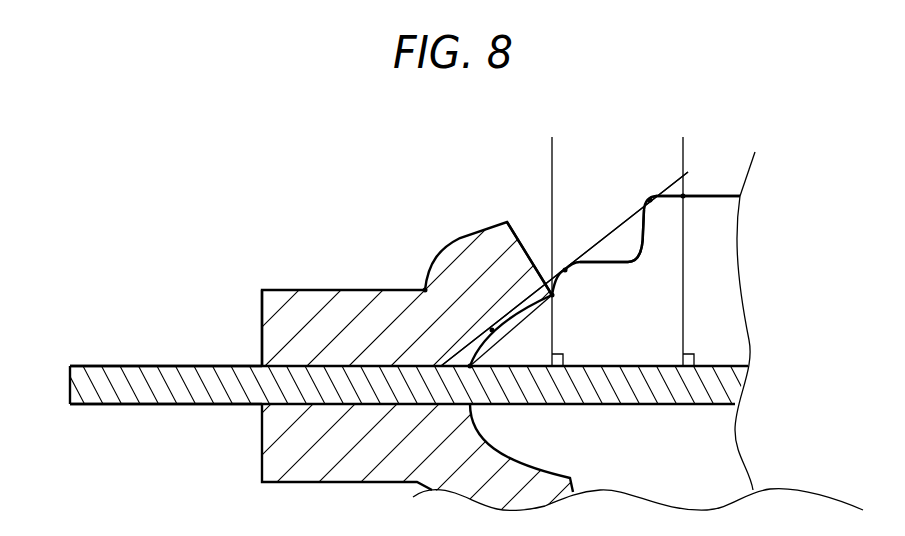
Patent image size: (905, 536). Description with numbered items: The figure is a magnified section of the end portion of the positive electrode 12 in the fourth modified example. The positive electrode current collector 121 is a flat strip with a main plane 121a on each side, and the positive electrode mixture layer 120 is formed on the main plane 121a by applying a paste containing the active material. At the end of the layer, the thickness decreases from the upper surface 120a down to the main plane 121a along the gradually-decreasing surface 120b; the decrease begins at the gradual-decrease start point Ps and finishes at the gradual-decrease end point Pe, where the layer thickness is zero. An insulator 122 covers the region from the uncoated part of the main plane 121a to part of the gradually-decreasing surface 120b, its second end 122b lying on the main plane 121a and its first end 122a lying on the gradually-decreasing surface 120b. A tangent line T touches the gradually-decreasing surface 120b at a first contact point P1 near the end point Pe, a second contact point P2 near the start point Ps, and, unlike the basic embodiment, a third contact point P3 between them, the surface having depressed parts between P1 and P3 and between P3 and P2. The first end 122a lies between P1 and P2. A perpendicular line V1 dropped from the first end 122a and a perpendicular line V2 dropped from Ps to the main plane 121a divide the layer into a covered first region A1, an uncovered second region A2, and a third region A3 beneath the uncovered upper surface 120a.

The positive electrode 12 is at (160, 166).
The positive electrode mixture layer 120 is at (732, 282).
The upper surface of the positive electrode mixture layer 120a is at (735, 195).
The gradually-decreasing surface 120b is at (636, 238).
The positive electrode current collector 121 is at (742, 386).
The main plane of the positive electrode current collector 121a is at (143, 366).
The insulator 122 is at (316, 302).
The first end of the insulator 122a is at (552, 296).
The second end of the insulator 122b is at (262, 366).
The perpendicular line V1 is at (553, 238).
The perpendicular line V2 is at (683, 238).
The tangent line T is at (572, 260).
The first contact point P1 is at (492, 331).
The second contact point P2 is at (650, 200).
The third contact point P3 is at (565, 270).
The gradual-decrease end point Pe is at (425, 289).
The gradual-decrease start point Ps is at (683, 197).
The first region A1 is at (489, 357).
The second region A2 is at (625, 356).
The third region A3 is at (705, 337).